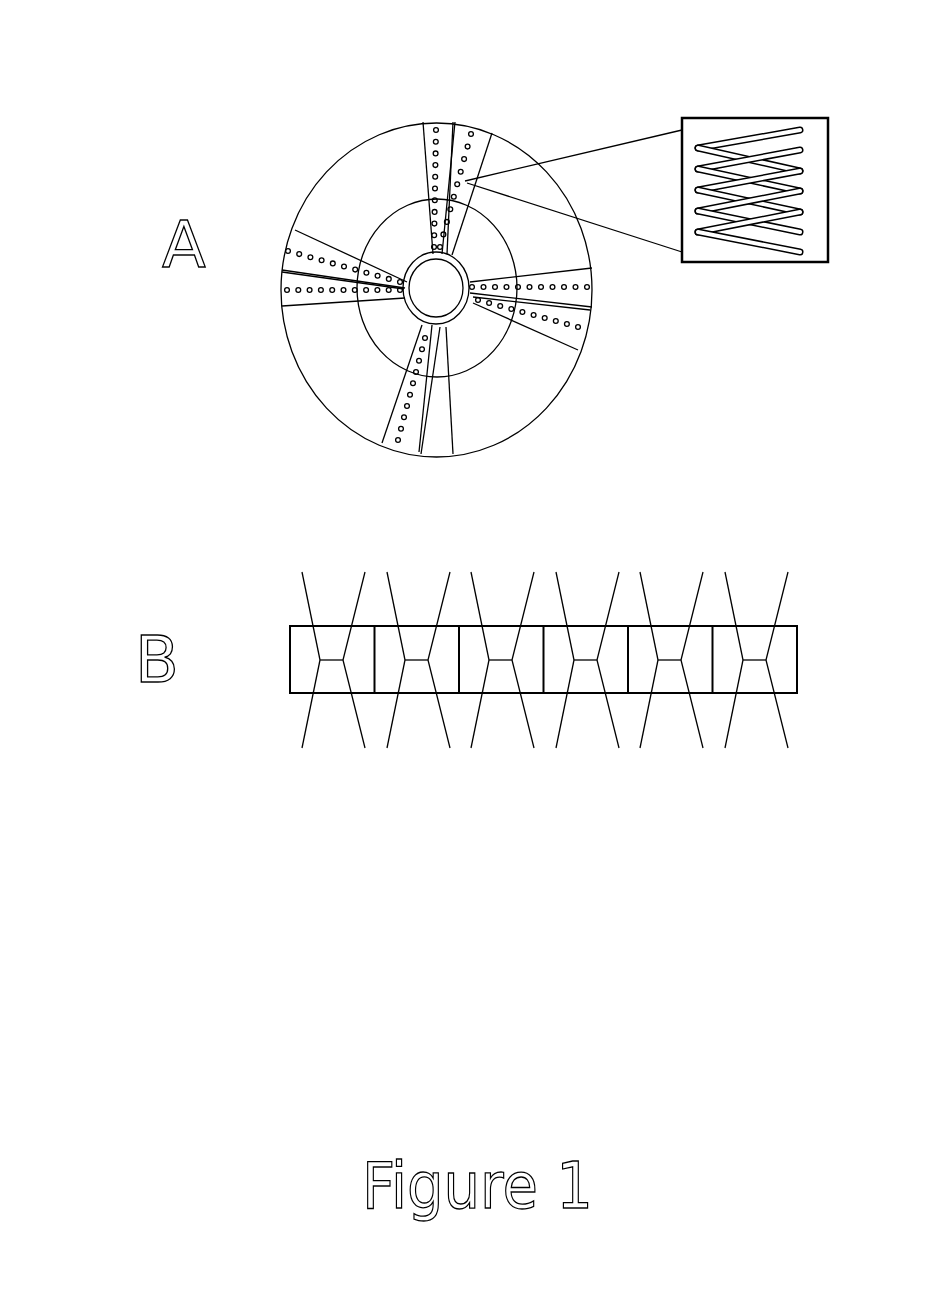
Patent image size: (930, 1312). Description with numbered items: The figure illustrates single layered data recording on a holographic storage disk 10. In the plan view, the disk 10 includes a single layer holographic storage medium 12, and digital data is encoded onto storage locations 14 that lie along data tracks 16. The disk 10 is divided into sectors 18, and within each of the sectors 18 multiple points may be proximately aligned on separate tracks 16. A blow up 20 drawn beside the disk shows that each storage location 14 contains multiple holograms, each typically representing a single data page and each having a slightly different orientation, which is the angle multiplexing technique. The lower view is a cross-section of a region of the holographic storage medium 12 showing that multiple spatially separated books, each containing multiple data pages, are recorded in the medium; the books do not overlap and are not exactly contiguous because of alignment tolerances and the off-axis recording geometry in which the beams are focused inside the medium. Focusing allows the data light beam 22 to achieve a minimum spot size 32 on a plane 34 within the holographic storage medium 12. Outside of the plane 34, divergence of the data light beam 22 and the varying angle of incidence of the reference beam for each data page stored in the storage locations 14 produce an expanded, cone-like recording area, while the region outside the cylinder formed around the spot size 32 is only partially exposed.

In FIG. 1A, the holographic storage disk 10 is at (390, 112).
In FIG. 1A, the single layer holographic storage medium 12 is at (373, 182).
In FIG. 1A, the storage locations 14 is at (402, 427).
In FIG. 1B, the storage locations 14 is at (337, 673).
In FIG. 1A, the data tracks 16 is at (373, 347).
In FIG. 1A, the sectors 18 is at (293, 228).
In FIG. 1A, the blow up 20 is at (728, 117).
In FIG. 1B, the data light beam 22 is at (325, 602).
In FIG. 1B, the minimum spot size 32 is at (333, 658).
In FIG. 1B, the plane 34 is at (283, 658).